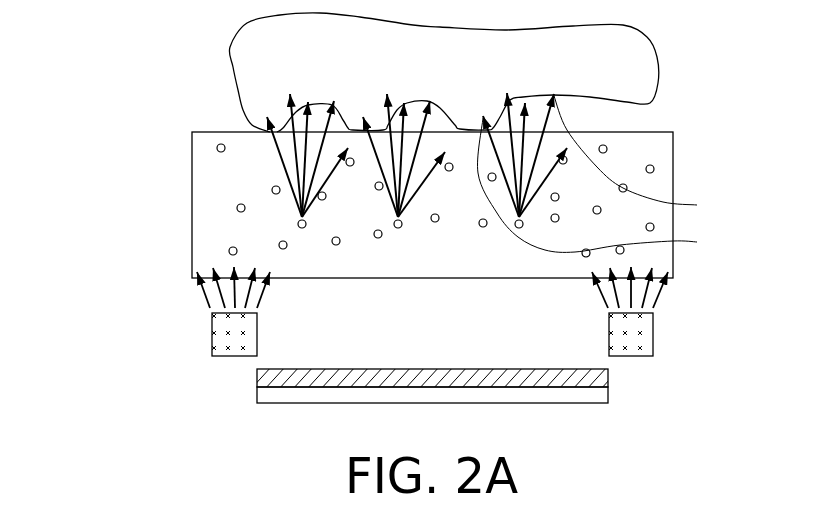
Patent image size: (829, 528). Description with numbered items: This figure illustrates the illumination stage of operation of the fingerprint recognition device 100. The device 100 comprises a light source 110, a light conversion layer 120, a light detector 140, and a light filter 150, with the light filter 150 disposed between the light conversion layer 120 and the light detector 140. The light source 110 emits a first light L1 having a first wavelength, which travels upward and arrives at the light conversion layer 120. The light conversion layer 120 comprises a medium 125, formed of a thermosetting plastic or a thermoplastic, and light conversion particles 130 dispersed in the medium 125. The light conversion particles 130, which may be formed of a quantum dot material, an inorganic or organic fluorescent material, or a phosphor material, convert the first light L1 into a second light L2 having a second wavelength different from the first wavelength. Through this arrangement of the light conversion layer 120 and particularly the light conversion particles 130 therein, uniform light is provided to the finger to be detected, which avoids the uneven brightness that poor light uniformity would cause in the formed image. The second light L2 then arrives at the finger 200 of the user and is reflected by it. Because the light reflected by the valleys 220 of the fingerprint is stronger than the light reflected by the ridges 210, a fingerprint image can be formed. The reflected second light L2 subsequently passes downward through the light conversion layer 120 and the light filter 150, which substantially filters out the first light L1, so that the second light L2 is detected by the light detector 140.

The fingerprint recognition device 100 is at (125, 83).
The light source 110 is at (228, 347).
The light conversion layer 120 is at (127, 202).
The medium 125 is at (212, 250).
The light conversion particles 130 is at (238, 208).
The light detector 140 is at (603, 395).
The light filter 150 is at (602, 378).
The finger 200 is at (645, 64).
The ridges 210 is at (697, 242).
The valleys 220 is at (697, 205).
The first light L1 is at (663, 293).
The second light L2 is at (283, 168).